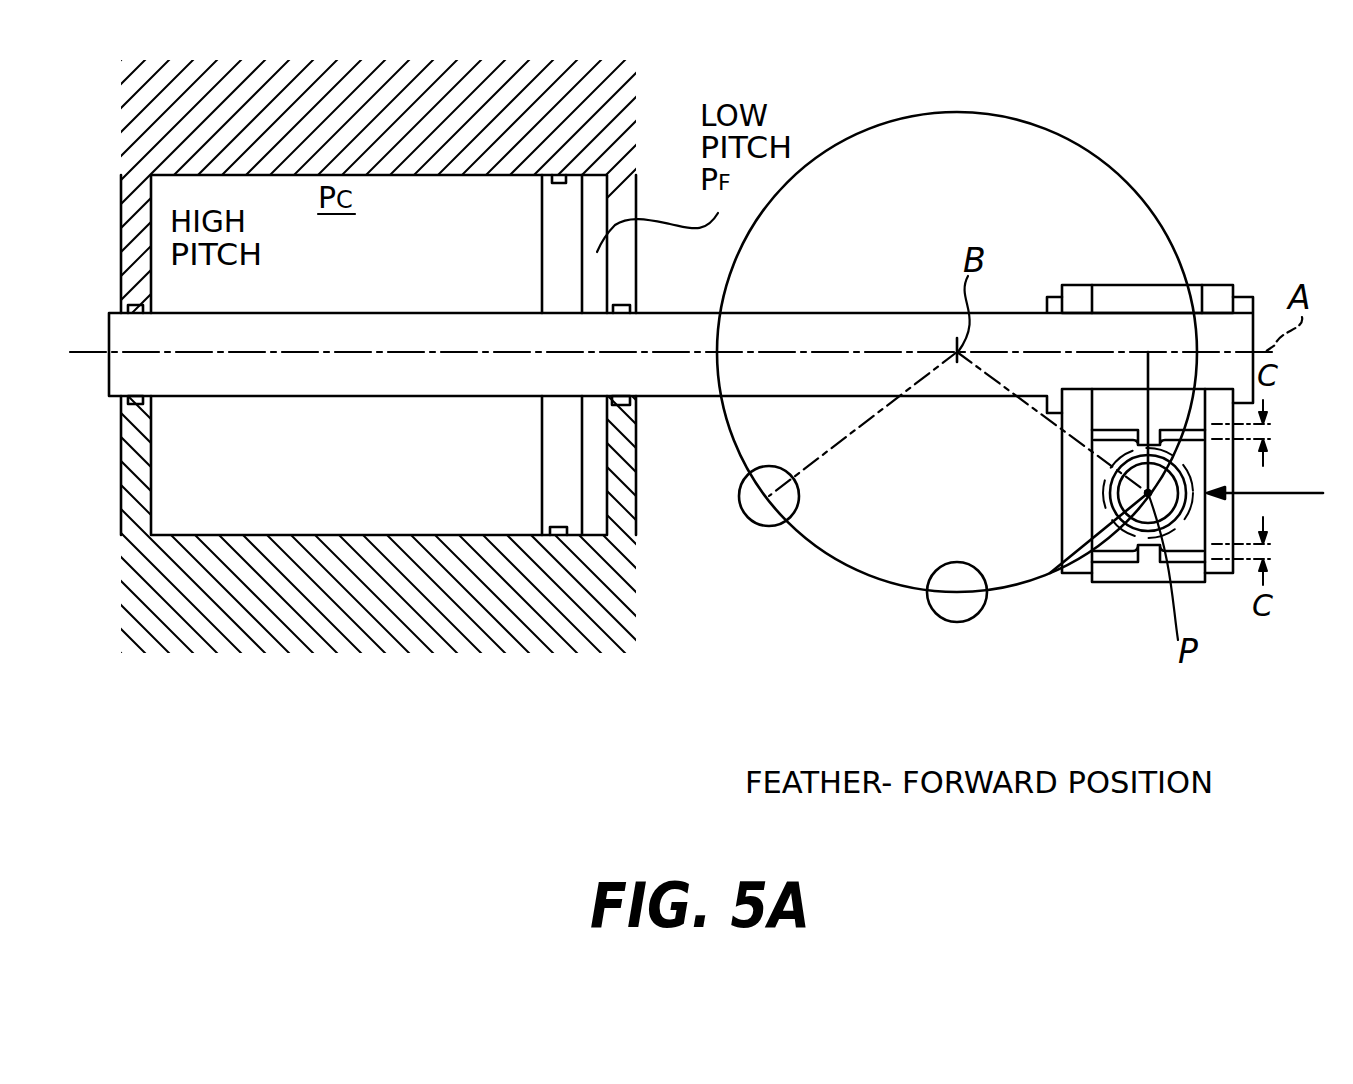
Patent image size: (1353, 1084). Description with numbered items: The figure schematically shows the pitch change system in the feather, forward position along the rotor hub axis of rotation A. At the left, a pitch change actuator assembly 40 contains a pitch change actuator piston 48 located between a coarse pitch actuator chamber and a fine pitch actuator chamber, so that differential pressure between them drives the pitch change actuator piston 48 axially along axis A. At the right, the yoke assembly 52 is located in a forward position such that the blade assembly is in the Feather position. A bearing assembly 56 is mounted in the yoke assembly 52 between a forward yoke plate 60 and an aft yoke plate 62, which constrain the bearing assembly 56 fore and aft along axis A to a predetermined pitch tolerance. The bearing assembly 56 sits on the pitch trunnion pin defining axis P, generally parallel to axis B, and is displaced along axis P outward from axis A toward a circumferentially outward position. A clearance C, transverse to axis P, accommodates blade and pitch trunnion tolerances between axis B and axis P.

The pitch change actuator assembly 40 is at (410, 598).
The pitch change actuator piston 48 is at (568, 193).
The yoke assembly 52 is at (1215, 590).
The bearing assembly 56 is at (1106, 528).
The forward yoke plate 60 is at (1070, 495).
The aft yoke plate 62 is at (1222, 482).